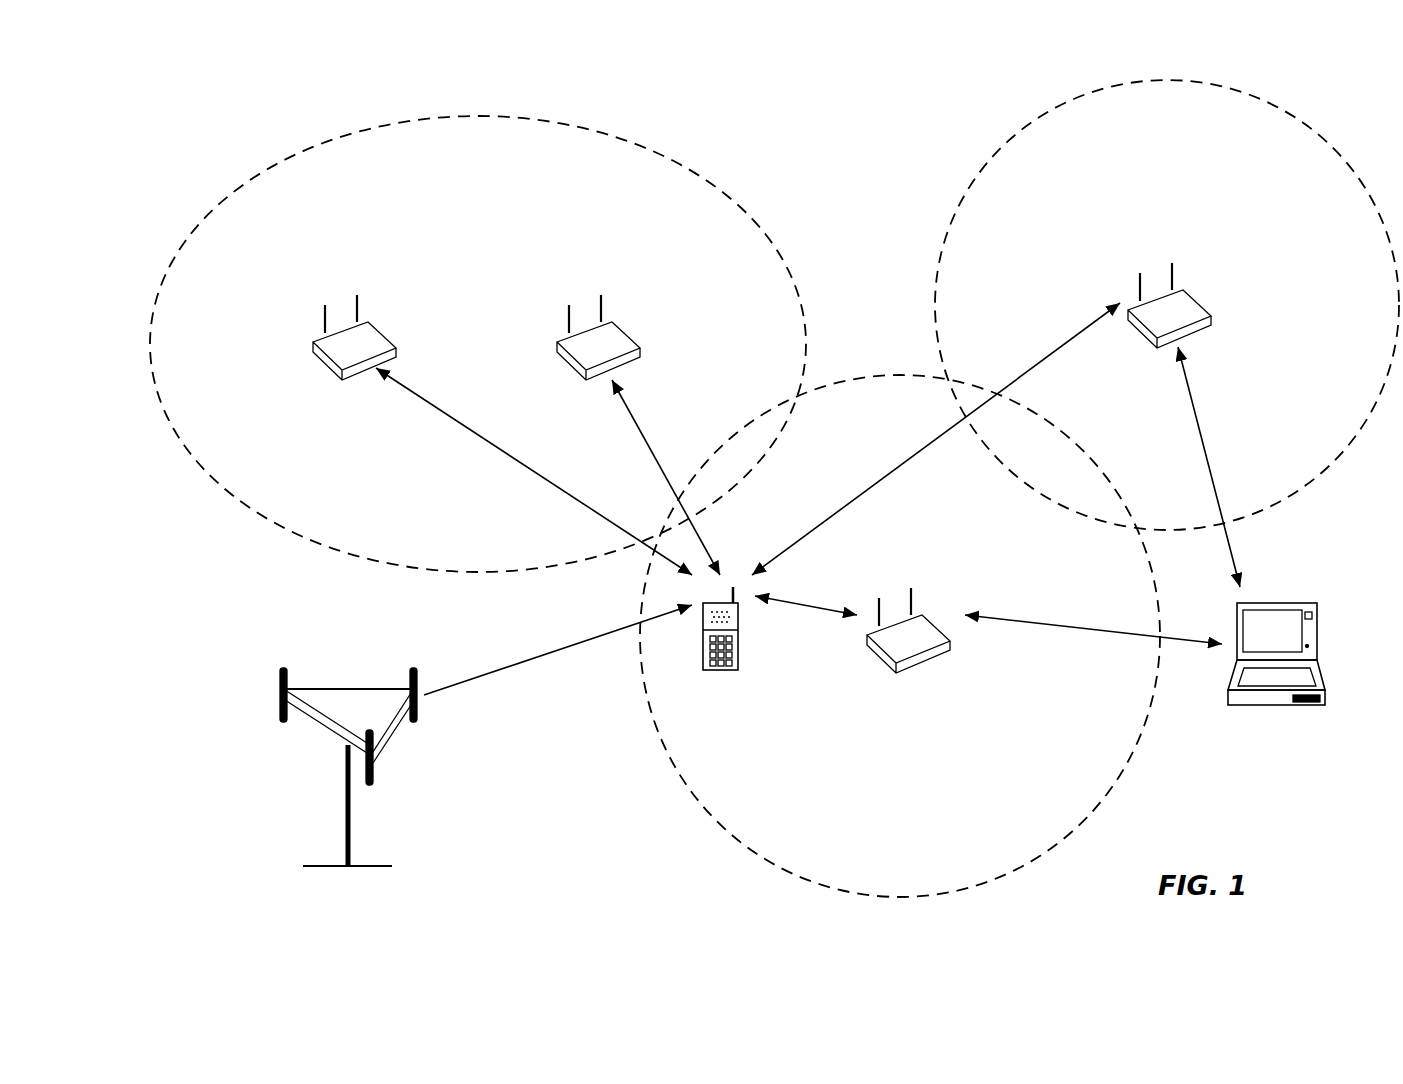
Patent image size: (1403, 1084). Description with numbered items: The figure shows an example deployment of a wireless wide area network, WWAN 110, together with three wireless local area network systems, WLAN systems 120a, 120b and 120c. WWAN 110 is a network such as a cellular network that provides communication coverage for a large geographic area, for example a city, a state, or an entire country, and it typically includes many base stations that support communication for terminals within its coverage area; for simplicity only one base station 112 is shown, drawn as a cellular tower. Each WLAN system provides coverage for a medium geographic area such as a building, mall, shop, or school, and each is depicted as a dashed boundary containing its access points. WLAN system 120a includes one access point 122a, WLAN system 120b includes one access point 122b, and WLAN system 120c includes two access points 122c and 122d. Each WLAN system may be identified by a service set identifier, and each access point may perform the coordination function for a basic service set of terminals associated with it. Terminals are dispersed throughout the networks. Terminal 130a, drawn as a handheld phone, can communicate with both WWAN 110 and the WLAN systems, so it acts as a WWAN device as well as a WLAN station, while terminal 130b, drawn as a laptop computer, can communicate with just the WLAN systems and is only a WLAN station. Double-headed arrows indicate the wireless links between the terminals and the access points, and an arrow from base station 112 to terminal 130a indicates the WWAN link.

The WWAN 110 is at (289, 732).
The base station 112 is at (344, 686).
The WLAN system 120a is at (879, 375).
The WLAN system 120b is at (1318, 148).
The WLAN system 120c is at (705, 180).
The access point 122a is at (933, 619).
The access point 122b is at (1191, 297).
The access point 122c is at (622, 329).
The access point 122d is at (378, 329).
The terminal 130a is at (741, 653).
The terminal 130b is at (1270, 602).